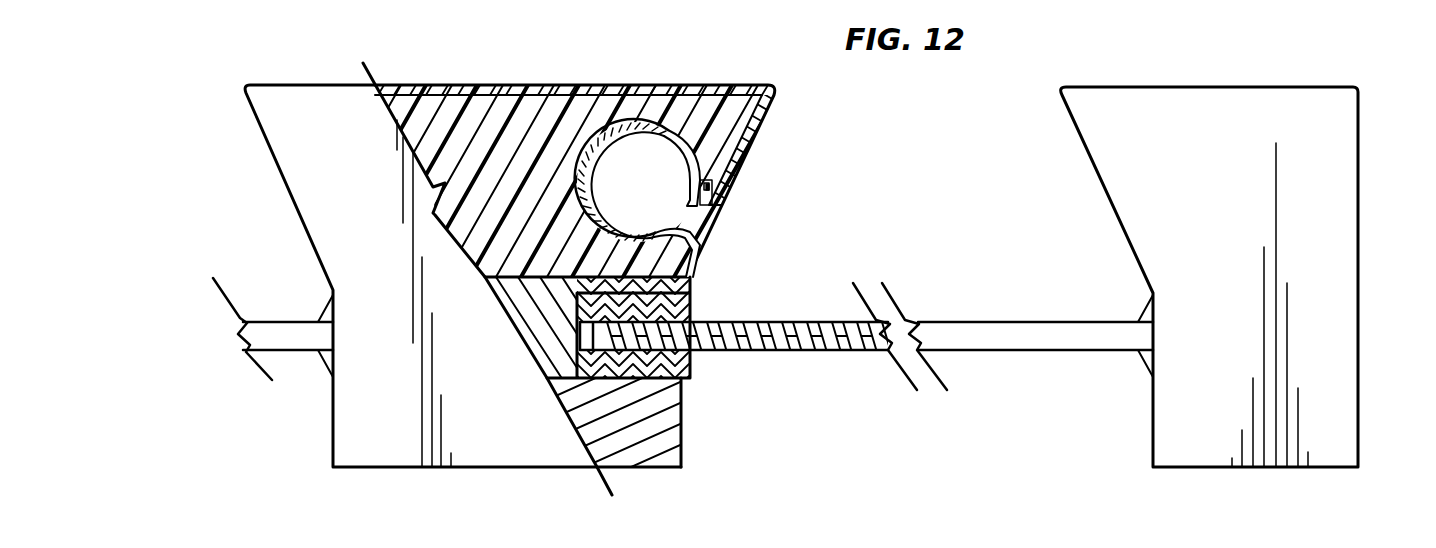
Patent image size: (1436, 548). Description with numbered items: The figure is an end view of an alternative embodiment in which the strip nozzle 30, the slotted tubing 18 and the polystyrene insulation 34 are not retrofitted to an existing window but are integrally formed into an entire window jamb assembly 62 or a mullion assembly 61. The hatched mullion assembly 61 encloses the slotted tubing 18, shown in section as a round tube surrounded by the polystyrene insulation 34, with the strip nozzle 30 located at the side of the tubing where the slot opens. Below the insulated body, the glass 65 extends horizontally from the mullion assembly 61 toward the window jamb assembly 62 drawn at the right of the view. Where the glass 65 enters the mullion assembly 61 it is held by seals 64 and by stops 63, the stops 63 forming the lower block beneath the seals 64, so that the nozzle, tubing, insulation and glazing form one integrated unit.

The slotted tubing 18 is at (583, 145).
The strip nozzle 30 is at (720, 193).
The polystyrene insulation 34 is at (476, 124).
The mullion assembly 61 is at (575, 157).
The window jamb assembly 62 is at (1115, 95).
The stops 63 is at (682, 447).
The seals 64 is at (685, 372).
The glass 65 is at (787, 352).